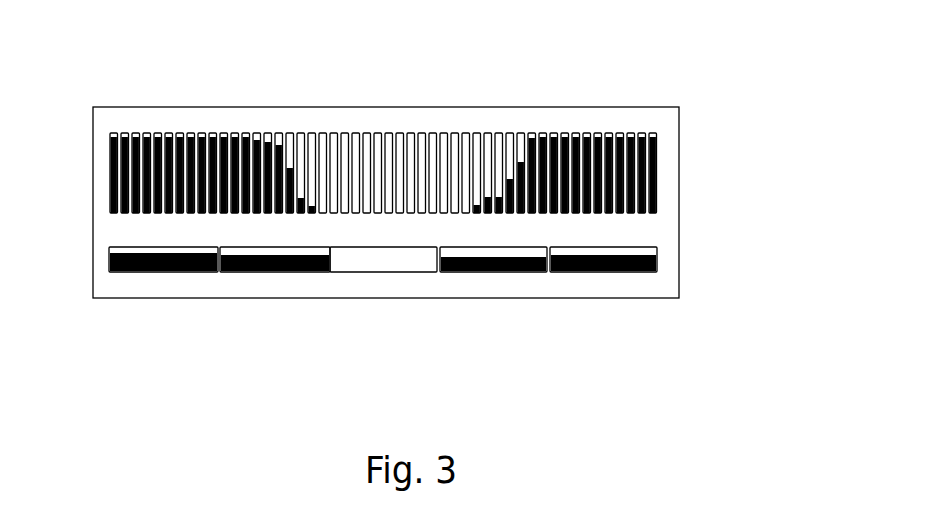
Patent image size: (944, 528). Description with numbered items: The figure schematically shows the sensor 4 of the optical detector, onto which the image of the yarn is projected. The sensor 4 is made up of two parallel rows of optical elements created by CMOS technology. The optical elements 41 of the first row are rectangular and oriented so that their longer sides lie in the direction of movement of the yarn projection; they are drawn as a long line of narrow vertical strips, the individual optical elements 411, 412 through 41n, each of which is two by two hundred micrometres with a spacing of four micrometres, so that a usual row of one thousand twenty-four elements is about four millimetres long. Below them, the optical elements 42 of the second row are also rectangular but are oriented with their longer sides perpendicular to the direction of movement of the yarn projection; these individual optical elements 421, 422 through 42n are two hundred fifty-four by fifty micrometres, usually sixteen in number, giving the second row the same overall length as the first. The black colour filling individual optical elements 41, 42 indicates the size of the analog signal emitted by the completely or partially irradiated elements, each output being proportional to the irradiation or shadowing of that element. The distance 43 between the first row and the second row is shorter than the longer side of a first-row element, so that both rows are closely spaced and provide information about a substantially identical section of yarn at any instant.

The sensor 4 is at (667, 130).
The optical elements of the first row 41 is at (416, 119).
The first individual optical element of the first row 411 is at (112, 135).
The second individual optical element of the first row 412 is at (123, 135).
The nth individual optical element of the first row 41n is at (652, 133).
The optical elements of the second row 42 is at (442, 316).
The first individual optical element of the second row 421 is at (162, 272).
The second individual optical element of the second row 422 is at (273, 272).
The nth individual optical element of the second row 42n is at (632, 272).
The distance between the first row and the second row of optical elements 43 is at (655, 232).